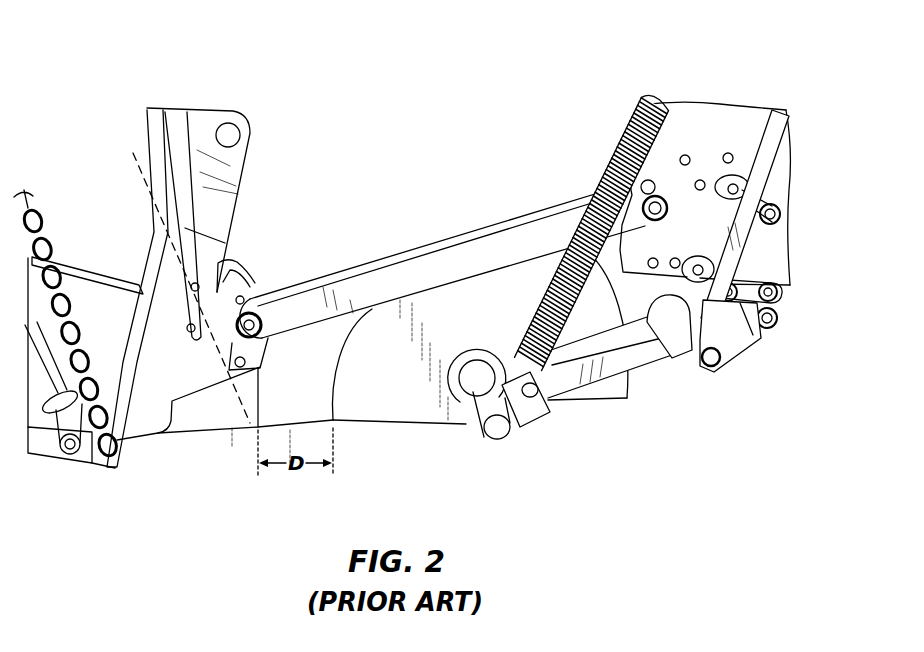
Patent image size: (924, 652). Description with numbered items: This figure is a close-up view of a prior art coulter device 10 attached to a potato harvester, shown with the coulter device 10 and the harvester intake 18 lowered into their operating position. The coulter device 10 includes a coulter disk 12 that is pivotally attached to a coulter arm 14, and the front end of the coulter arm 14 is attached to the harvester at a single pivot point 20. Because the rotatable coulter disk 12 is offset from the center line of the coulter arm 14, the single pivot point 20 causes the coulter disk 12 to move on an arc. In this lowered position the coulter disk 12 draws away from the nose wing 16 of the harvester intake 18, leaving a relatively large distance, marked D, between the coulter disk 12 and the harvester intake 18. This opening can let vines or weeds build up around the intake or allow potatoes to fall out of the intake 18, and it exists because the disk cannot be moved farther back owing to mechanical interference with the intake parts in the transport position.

The coulter device 10 is at (784, 370).
The coulter disk 12 is at (463, 303).
The coulter arm 14 is at (630, 363).
The nose wing 16 is at (223, 407).
The harvester intake 18 is at (107, 181).
The single pivot point 20 is at (660, 323).